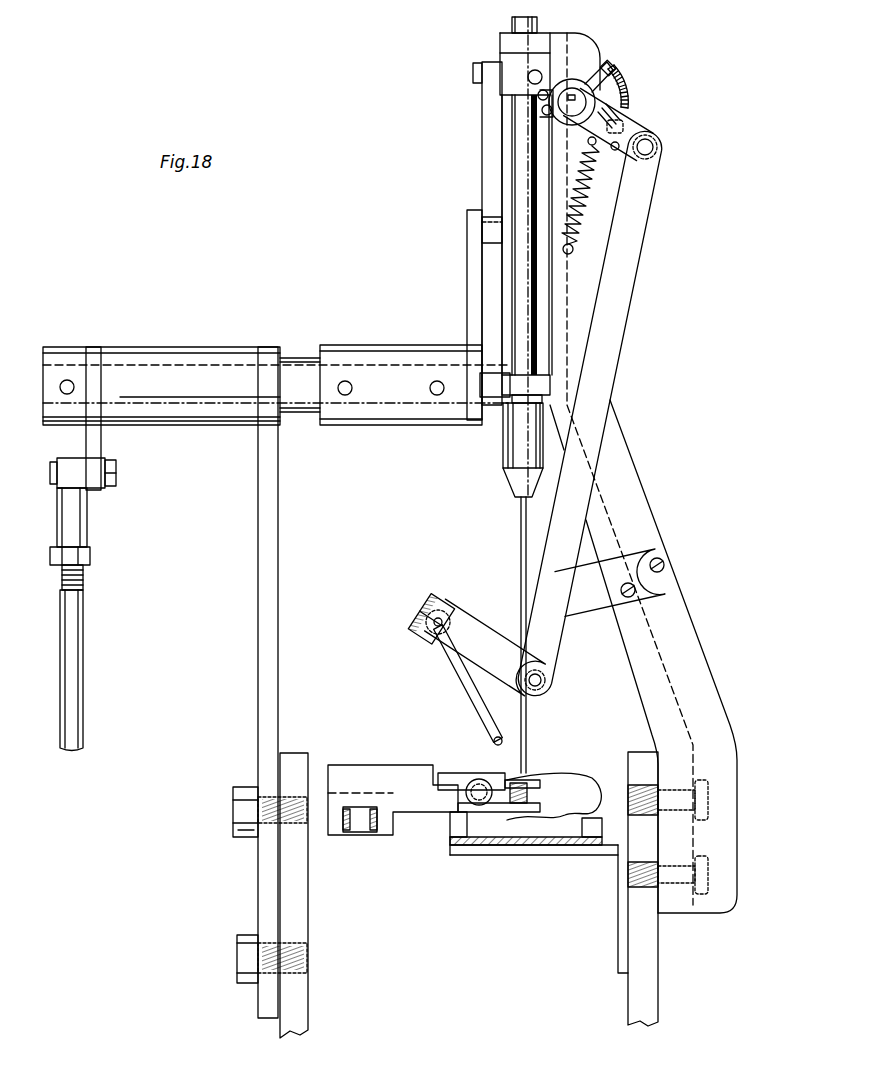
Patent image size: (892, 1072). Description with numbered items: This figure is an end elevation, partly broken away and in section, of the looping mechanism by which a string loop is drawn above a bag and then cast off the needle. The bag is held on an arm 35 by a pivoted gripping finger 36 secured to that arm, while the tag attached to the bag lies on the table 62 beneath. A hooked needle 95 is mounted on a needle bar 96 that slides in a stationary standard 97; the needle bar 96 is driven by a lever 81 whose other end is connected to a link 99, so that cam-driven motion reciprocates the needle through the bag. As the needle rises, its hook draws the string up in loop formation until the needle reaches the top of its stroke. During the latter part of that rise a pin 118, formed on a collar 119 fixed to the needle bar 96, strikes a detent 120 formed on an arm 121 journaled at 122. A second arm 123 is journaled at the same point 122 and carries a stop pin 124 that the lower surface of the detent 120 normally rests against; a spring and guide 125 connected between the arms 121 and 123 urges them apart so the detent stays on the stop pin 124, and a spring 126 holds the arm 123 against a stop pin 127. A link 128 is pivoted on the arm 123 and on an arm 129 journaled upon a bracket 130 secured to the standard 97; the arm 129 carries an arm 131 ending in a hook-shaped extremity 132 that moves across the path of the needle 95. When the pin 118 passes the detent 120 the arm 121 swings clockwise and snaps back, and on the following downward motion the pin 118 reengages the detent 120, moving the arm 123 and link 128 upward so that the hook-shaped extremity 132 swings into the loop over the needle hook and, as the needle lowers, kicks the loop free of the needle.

The pin 118 is at (530, 73).
The collar 119 is at (510, 90).
The detent 120 is at (546, 93).
The arm 121 is at (590, 84).
The journal 122 is at (582, 100).
The second arm 123 is at (635, 133).
The stop pin 124 is at (544, 113).
The spring and guide 125 is at (627, 102).
The spring 126 is at (612, 173).
The stop pin 127 is at (598, 138).
The link 128 is at (618, 322).
The needle bar 96 is at (522, 292).
The lever 81 is at (472, 317).
The stationary standard 97 is at (638, 508).
The needle 95 is at (518, 540).
The bracket 130 is at (587, 602).
The arm 129 is at (490, 657).
The arm 131 is at (485, 717).
The hook-shaped extremity 132 is at (498, 745).
The pivoted gripping finger 36 is at (472, 775).
The arm 35 is at (448, 800).
The table 62 is at (560, 841).
The link 99 is at (70, 618).